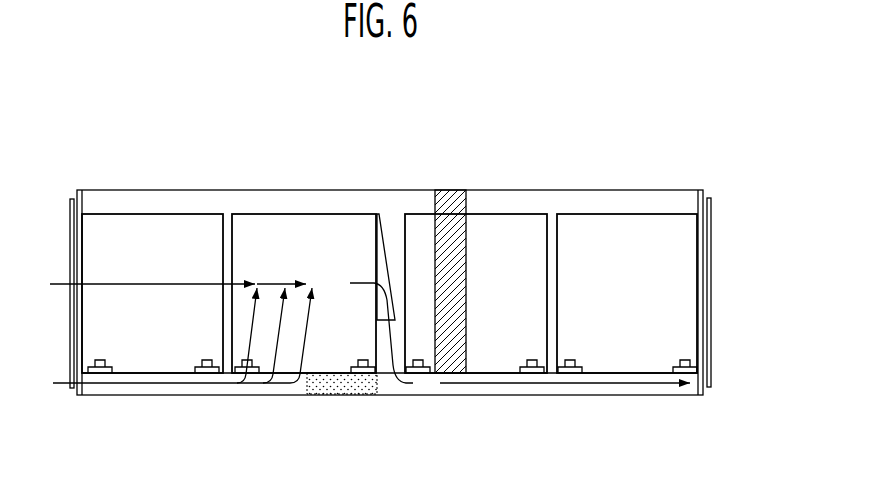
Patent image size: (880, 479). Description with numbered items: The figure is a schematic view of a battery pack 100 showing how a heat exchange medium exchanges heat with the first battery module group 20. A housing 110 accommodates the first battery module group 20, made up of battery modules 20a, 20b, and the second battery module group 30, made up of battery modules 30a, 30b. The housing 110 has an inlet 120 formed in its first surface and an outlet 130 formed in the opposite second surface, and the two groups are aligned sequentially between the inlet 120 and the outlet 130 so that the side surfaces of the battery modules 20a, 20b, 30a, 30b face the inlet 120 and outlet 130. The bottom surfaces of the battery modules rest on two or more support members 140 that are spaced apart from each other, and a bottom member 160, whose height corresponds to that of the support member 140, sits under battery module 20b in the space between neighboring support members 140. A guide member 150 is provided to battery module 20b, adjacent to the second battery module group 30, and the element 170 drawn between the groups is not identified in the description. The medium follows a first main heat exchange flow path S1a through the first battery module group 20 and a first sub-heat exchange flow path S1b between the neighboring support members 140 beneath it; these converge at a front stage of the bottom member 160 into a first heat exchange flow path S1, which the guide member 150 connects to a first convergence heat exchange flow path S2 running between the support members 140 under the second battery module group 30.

The battery pack 100 is at (391, 240).
The housing 110 is at (686, 187).
The inlet 120 is at (70, 302).
The outlet 130 is at (713, 295).
The first battery module group 20 is at (229, 244).
The battery module 20a is at (142, 212).
The battery module 20b is at (304, 259).
The second battery module group 30 is at (551, 243).
The battery module 30a is at (498, 212).
The battery module 30b is at (627, 259).
The support member 140 is at (390, 394).
The guide member 150 is at (389, 243).
The bottom member 160 is at (332, 394).
The partition wall 170 is at (442, 193).
The first main heat exchange flow path S1a is at (178, 275).
The first sub-heat exchange flow path S1b is at (182, 337).
The first heat exchange flow path S1 is at (371, 328).
The first convergence heat exchange flow path S2 is at (552, 385).